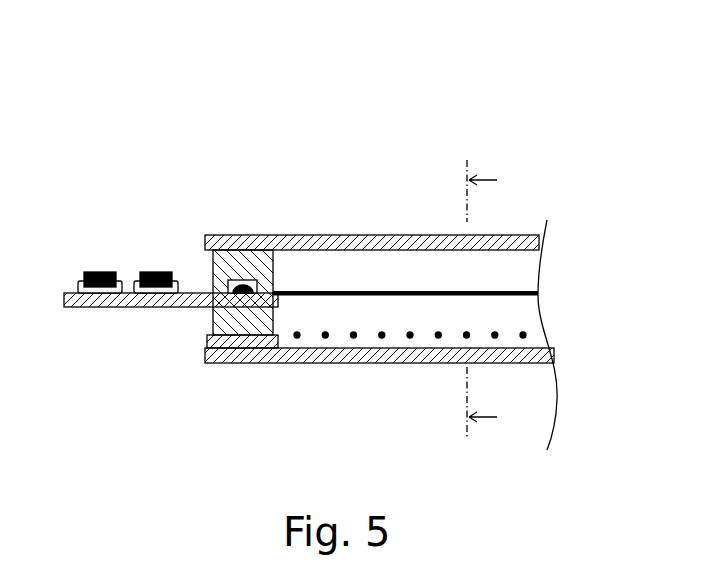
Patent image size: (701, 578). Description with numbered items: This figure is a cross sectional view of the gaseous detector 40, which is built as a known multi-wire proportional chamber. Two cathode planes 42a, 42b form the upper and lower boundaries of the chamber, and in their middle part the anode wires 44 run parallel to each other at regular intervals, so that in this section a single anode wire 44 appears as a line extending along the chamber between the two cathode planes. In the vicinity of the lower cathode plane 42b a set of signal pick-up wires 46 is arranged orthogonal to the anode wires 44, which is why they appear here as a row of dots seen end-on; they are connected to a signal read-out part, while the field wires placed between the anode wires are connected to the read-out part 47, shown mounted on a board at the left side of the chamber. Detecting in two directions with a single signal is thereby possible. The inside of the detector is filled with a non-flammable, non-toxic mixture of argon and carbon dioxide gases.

The gaseous detector 40 is at (449, 109).
The cathode plane 42a is at (295, 235).
The cathode plane 42b is at (225, 363).
The anode wire 44 is at (405, 226).
The signal pick-up wire 46 is at (397, 396).
The read-out part 47 is at (103, 272).